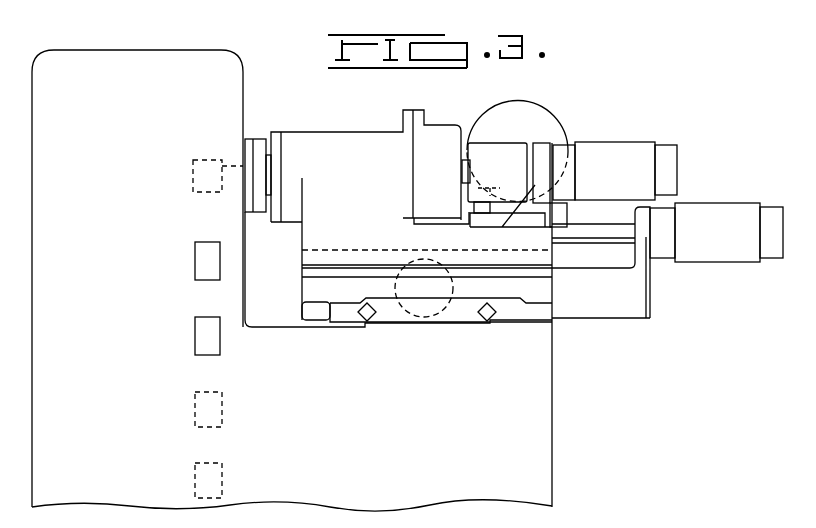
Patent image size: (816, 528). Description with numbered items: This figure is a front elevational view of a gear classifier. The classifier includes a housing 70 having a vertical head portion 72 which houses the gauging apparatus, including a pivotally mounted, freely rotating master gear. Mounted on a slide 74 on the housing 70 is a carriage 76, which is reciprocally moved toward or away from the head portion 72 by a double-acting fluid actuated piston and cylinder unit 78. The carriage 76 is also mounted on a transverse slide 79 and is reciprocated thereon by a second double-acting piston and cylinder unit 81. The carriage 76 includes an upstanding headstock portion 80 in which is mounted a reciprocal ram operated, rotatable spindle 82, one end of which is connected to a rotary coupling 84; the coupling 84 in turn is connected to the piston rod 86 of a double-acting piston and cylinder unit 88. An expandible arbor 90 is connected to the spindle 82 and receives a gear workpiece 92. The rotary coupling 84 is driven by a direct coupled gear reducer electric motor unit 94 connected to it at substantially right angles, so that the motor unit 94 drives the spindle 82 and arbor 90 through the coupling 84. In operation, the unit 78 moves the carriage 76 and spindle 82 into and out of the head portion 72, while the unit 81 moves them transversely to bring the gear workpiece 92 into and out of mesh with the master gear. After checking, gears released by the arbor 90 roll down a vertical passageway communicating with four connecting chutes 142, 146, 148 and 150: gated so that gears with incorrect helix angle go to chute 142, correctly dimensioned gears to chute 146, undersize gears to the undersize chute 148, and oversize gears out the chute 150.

The housing 70 is at (352, 424).
The head portion 72 is at (132, 98).
The slide 74 is at (570, 279).
The carriage 76 is at (393, 244).
The double-acting fluid actuated piston and cylinder unit 78 is at (730, 232).
The transverse slide 79 is at (302, 306).
The headstock portion 80 is at (366, 160).
The double-acting piston and cylinder unit 81 is at (460, 286).
The spindle 82 is at (268, 138).
The rotary coupling 84 is at (500, 143).
The piston rod 86 is at (528, 165).
The double-acting piston and cylinder unit 88 is at (632, 167).
The expandible arbor 90 is at (234, 165).
The gear workpiece 92 is at (193, 158).
The direct coupled gear reducer electric motor unit 94 is at (553, 80).
The chute 142 is at (195, 268).
The chute 146 is at (195, 338).
The undersize chute 148 is at (195, 408).
The chute 150 is at (195, 473).